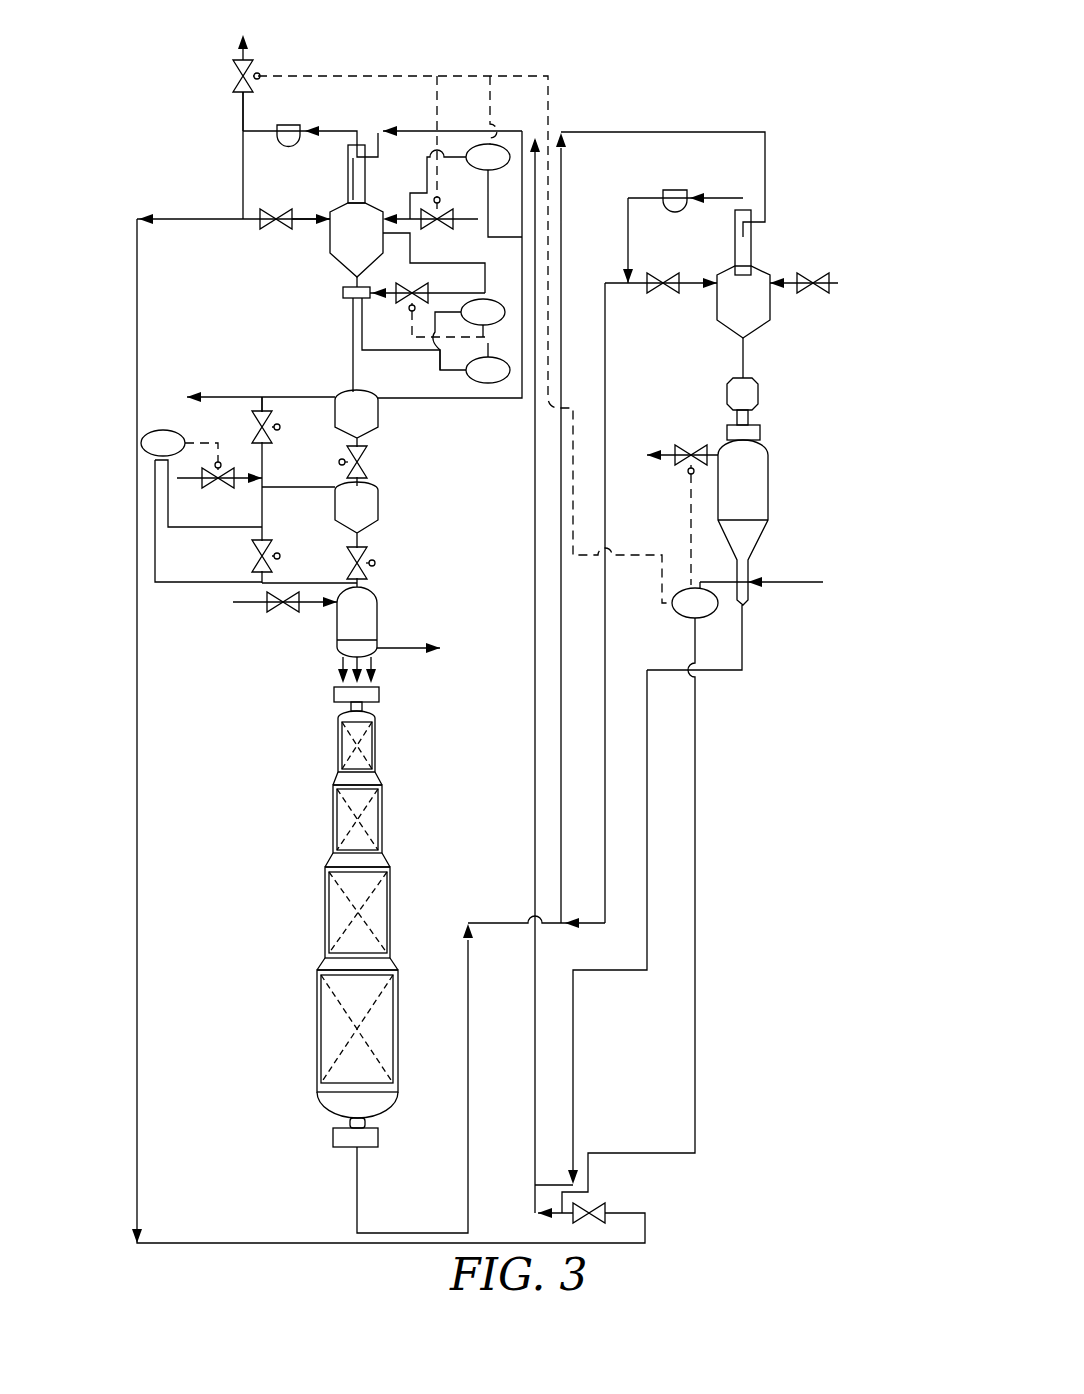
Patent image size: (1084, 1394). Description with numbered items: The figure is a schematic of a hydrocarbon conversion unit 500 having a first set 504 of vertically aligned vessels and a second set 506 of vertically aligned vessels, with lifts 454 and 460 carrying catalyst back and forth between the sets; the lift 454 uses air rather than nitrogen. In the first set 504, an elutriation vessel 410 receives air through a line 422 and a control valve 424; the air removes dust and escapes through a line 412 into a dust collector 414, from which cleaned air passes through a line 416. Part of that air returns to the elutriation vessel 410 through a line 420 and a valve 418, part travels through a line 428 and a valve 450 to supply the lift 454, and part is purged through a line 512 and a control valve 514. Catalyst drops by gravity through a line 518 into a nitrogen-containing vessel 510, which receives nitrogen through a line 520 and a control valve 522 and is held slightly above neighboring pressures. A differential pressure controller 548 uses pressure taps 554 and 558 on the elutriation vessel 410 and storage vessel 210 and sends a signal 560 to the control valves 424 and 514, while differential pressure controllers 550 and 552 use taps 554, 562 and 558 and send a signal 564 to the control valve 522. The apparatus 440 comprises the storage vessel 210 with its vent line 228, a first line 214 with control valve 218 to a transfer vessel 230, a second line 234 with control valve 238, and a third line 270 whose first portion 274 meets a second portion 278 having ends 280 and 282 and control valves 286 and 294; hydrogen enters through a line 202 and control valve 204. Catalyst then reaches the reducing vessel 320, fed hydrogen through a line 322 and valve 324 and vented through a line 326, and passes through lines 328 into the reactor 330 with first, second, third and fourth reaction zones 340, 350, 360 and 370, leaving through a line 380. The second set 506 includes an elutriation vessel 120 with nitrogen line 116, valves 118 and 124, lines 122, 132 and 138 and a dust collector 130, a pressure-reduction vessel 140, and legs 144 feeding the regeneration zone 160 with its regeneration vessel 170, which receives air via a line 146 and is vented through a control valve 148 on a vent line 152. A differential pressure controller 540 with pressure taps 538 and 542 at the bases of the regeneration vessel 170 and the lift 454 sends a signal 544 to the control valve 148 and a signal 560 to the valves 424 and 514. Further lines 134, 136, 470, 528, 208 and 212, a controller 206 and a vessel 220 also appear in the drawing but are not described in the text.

The hydrocarbon conversion unit 500 is at (158, 130).
The first set 504 is at (342, 72).
The second set 506 is at (773, 122).
The control valve 514 is at (232, 80).
The signal 560 is at (572, 407).
The line 512 is at (240, 118).
The line 416 is at (241, 181).
The line 412 is at (338, 129).
The dust collector 414 is at (288, 125).
The elutriation vessel 410 is at (365, 177).
The valve 418 is at (267, 225).
The line 420 is at (305, 222).
The lift 454 is at (522, 128).
The differential pressure controller 548 is at (466, 190).
The line 422 is at (453, 210).
The control valve 424 is at (448, 222).
The pressure tap 554 is at (393, 240).
The line 518 is at (340, 277).
The nitrogen-containing vessel 510 is at (343, 297).
The line 520 is at (428, 293).
The control valve 522 is at (410, 311).
The differential pressure controller 550 is at (469, 334).
The line 528 is at (352, 350).
The pressure tap 562 is at (400, 352).
The differential pressure controller 552 is at (488, 363).
The signal 564 is at (493, 358).
The pressure tap 558 is at (515, 400).
The line 428 is at (140, 998).
The valve 450 is at (603, 1210).
The apparatus 440 is at (183, 375).
The vent line 228 is at (245, 395).
The end 280 is at (262, 402).
The control valve 286 is at (280, 425).
The control valve 204 is at (235, 464).
The controller 206 is at (163, 443).
The line 202 is at (185, 485).
The second portion 278 is at (252, 495).
The first portion 274 is at (322, 487).
The line 208 is at (212, 527).
The third line 270 is at (248, 546).
The control valve 294 is at (280, 548).
The another end 282 is at (275, 585).
The line 212 is at (178, 590).
The line 322 is at (248, 606).
The valve 324 is at (275, 610).
The storage vessel 210 is at (380, 413).
The first line 214 is at (367, 445).
The control valve 218 is at (367, 466).
The transfer vessel 230 is at (345, 480).
The vessel 220 is at (380, 487).
The second line 234 is at (367, 546).
The control valve 238 is at (371, 567).
The reducing vessel 320 is at (377, 603).
The line 326 is at (421, 648).
The lines 328 is at (400, 678).
The reactor 330 is at (288, 840).
The first reaction zone 340 is at (378, 746).
The second reaction zone 350 is at (385, 820).
The third reaction zone 360 is at (392, 915).
The fourth reaction zone 370 is at (400, 1032).
The line 380 is at (472, 1055).
The line 136 is at (607, 650).
The lift 460 is at (665, 130).
The dust collector 130 is at (674, 188).
The line 132 is at (720, 196).
The line 134 is at (630, 235).
The elutriation vessel 120 is at (752, 244).
The valve 118 is at (817, 270).
The line 116 is at (833, 290).
The line 122 is at (640, 292).
The valve 124 is at (670, 292).
The line 138 is at (745, 358).
The pressure-reduction vessel 140 is at (760, 400).
The legs 144 is at (778, 428).
The regeneration vessel 170 is at (768, 495).
The regeneration zone 160 is at (690, 430).
The control valve 148 is at (676, 450).
The vent line 152 is at (670, 458).
The signal 544 is at (689, 535).
The pressure tap 538 is at (708, 580).
The line 146 is at (792, 582).
The differential pressure controller 540 is at (695, 603).
The pressure tap 542 is at (698, 917).
The line 470 is at (650, 775).